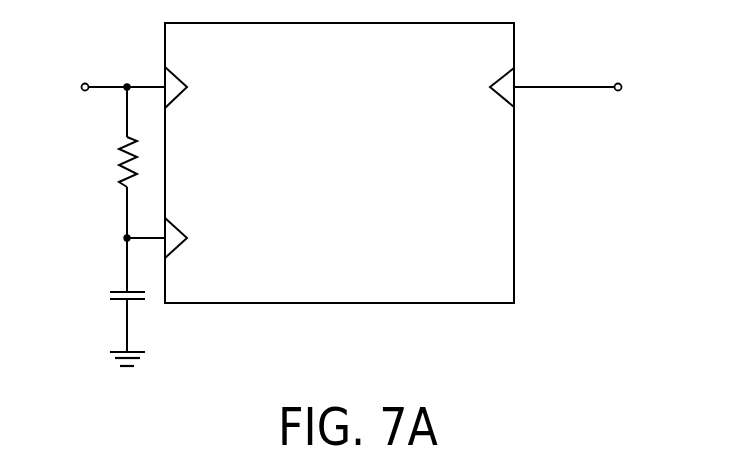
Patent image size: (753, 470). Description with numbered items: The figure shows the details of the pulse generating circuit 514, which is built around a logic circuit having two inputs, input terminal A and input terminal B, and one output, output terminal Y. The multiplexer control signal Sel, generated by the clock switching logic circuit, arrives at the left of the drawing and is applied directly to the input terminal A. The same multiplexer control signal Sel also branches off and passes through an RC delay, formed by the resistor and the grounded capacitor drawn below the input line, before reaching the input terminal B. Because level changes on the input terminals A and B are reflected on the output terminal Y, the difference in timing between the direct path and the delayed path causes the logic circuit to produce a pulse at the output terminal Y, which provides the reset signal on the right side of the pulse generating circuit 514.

The pulse generating circuit 514 is at (363, 178).
The input terminal A is at (190, 87).
The input terminal B is at (190, 238).
The output terminal Y is at (487, 87).
The multiplexer control signal Sel is at (98, 88).